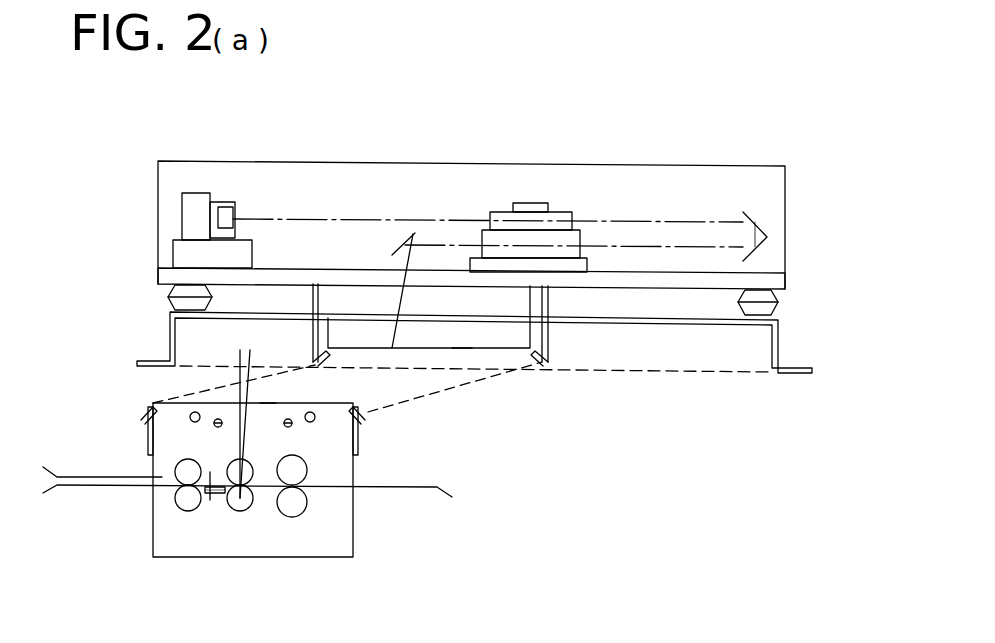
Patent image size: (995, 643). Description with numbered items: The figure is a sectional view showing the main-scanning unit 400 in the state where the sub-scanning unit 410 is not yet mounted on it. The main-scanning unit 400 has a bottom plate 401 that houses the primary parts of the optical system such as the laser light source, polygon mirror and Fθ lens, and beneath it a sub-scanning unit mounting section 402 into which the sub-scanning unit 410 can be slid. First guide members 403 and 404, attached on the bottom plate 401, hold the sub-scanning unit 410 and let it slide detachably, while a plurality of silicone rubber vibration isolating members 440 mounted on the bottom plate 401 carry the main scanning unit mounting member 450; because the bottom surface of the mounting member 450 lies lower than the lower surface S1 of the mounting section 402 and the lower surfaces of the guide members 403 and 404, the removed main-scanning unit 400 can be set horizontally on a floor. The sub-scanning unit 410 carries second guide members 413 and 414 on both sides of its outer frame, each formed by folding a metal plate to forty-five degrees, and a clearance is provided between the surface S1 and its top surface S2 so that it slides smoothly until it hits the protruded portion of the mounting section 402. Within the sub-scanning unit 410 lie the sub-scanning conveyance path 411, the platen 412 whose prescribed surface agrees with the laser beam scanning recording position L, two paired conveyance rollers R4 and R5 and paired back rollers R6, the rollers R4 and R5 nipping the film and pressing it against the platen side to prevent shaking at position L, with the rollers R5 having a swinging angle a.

The main-scanning unit 400 is at (481, 157).
The bottom plate 401 is at (608, 289).
The sub-scanning unit mounting section 402 is at (490, 349).
The first guide member 403 is at (546, 365).
The first guide member 404 is at (311, 362).
The sub-scanning unit 410 is at (369, 463).
The sub-scanning conveyance path 411 is at (393, 488).
The platen 412 is at (210, 500).
The second guide member 413 is at (366, 411).
The second guide member 414 is at (142, 410).
The vibration isolating member 440 is at (778, 302).
The main scanning unit mounting member 450 is at (780, 337).
The lower surface of the sub-scanning unit mounting section S1 is at (462, 349).
The top surface of the sub-scanning unit S2 is at (268, 403).
The conveyance roller R4 is at (188, 511).
The conveyance roller R5 is at (240, 511).
The back roller R6 is at (292, 517).
The laser beam scanning recording position L is at (213, 472).
The offset a is at (266, 370).